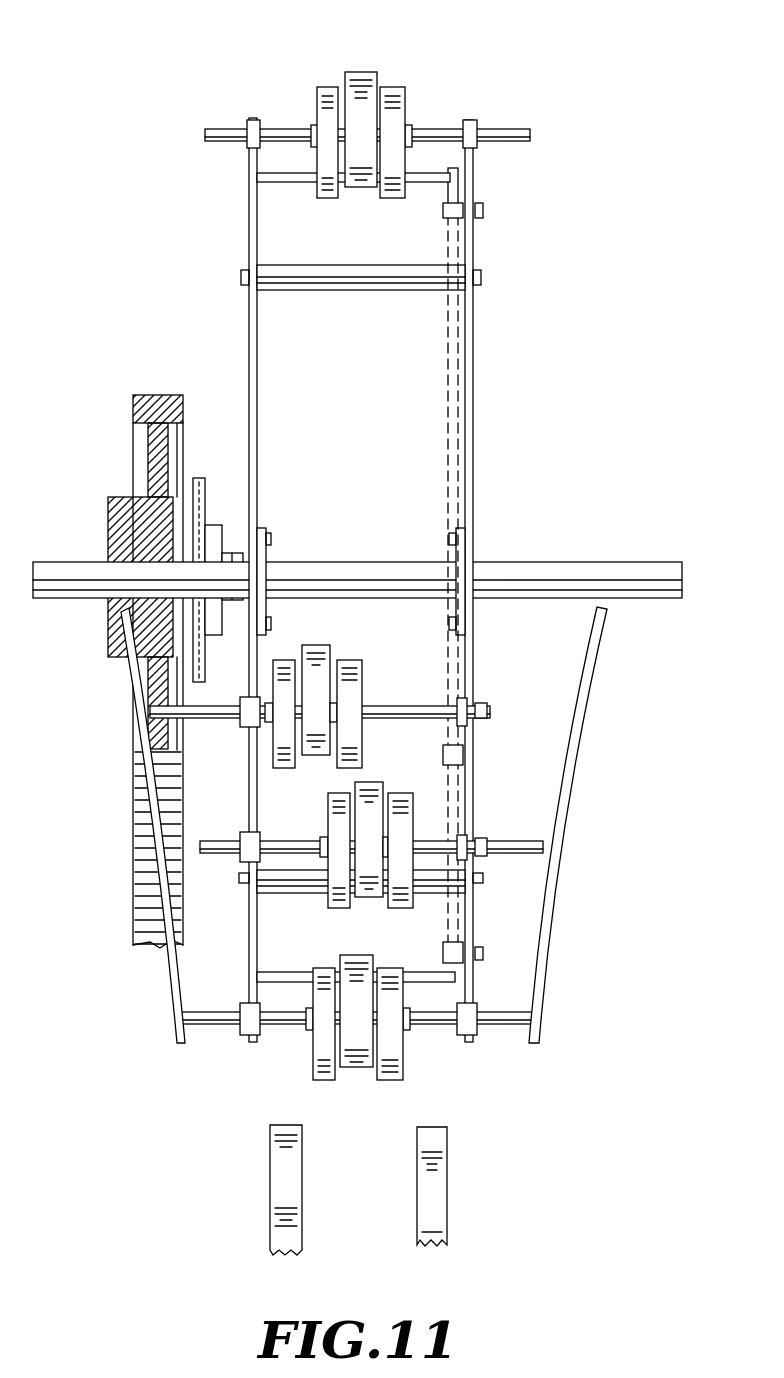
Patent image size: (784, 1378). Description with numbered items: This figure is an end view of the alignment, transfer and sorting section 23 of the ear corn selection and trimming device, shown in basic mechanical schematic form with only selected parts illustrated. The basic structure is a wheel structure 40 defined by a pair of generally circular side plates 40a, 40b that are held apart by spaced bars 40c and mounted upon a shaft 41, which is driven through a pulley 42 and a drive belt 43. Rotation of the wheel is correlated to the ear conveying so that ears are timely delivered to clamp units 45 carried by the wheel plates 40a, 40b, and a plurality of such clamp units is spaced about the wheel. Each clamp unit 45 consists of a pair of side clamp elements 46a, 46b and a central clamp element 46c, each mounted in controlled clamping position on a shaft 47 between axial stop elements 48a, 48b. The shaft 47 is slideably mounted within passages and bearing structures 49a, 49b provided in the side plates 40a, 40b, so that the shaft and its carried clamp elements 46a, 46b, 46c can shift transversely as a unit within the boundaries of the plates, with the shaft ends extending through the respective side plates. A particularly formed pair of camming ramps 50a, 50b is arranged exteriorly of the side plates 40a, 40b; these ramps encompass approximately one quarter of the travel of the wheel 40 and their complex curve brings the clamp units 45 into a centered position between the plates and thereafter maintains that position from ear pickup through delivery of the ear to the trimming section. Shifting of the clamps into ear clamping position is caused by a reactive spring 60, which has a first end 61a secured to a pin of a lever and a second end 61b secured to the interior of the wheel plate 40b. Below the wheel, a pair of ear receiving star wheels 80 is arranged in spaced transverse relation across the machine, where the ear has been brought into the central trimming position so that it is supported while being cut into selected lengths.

The alignment, transfer and sorting section 23 is at (610, 300).
The wheel structure 40 is at (361, 580).
The side plate 40a is at (476, 334).
The side plate 40b is at (250, 345).
The spaced bars 40c is at (348, 292).
The shaft 41 is at (572, 560).
The pulley 42 is at (108, 517).
The drive belt 43 is at (132, 836).
The clamp unit 45 is at (363, 582).
The side clamp element 46a is at (330, 92).
The side clamp element 46b is at (396, 95).
The central clamp element 46c is at (358, 80).
The shaft 47 is at (510, 130).
The axial stop element 48a is at (316, 128).
The axial stop element 48b is at (409, 130).
The bearing structure 49a is at (245, 148).
The bearing structure 49b is at (478, 150).
The camming ramp 50a is at (175, 989).
The camming ramp 50b is at (545, 990).
The reactive spring 60 is at (445, 800).
The first end 61a is at (447, 950).
The second end 61b is at (460, 756).
The star wheel 80 is at (270, 1195).